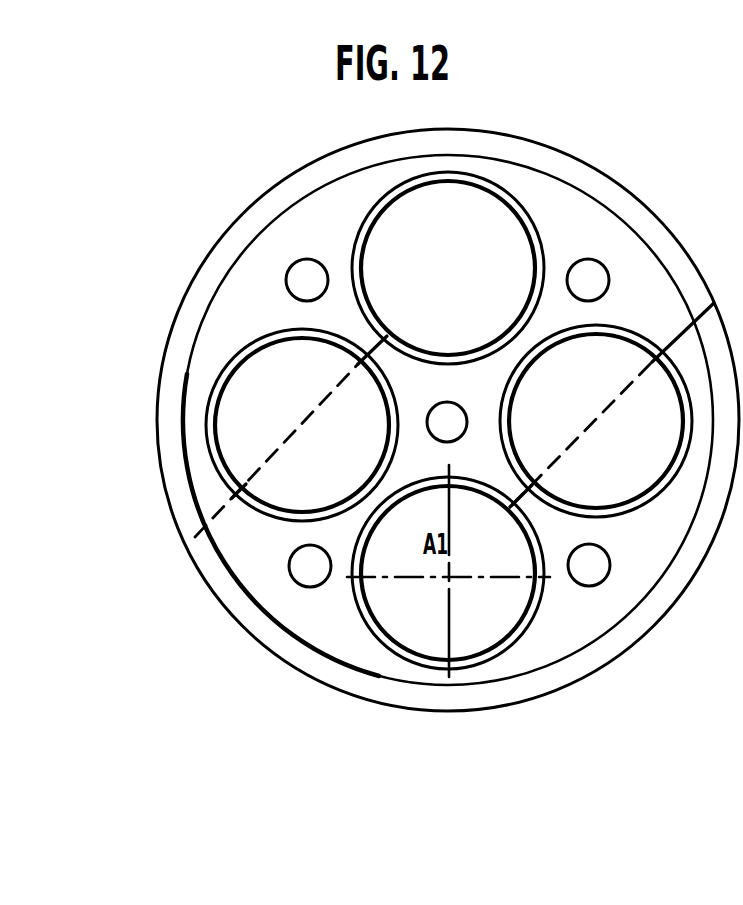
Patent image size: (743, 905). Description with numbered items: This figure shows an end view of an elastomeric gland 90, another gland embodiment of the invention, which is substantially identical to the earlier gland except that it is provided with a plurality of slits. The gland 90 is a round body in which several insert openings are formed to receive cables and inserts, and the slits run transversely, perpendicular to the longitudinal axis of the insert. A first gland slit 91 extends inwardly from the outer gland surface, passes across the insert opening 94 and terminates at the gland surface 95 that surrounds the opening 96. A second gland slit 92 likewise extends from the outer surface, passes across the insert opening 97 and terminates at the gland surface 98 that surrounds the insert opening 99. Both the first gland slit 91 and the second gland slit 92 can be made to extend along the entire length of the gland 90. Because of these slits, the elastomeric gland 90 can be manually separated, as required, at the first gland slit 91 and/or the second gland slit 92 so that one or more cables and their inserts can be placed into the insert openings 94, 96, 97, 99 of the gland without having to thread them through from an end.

The gland 90 is at (210, 257).
The first gland slit 91 is at (378, 352).
The second gland slit 92 is at (668, 344).
The insert opening 94 is at (216, 434).
The gland surface 95 is at (372, 311).
The opening 96 is at (360, 228).
The insert opening 97 is at (676, 453).
The gland surface 98 is at (526, 545).
The insert opening 99 is at (507, 627).